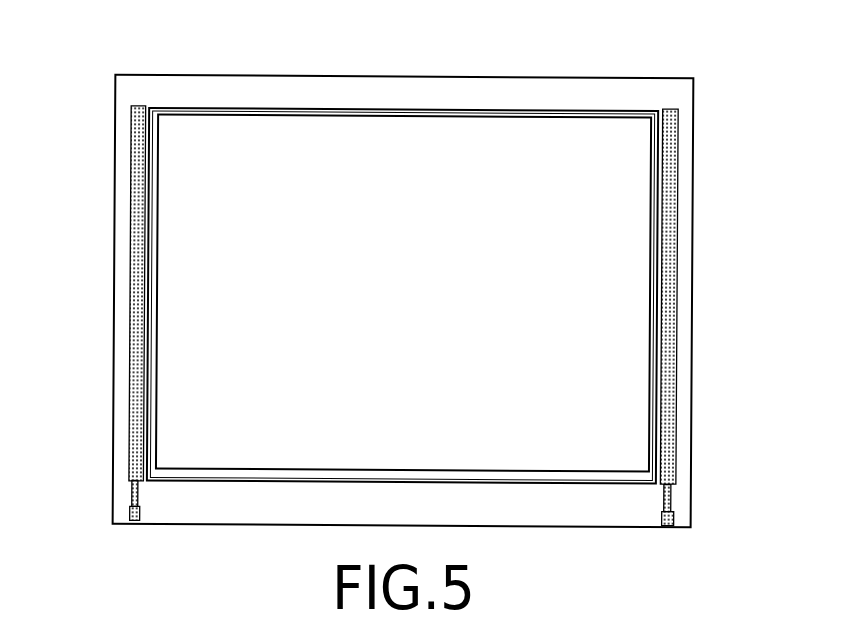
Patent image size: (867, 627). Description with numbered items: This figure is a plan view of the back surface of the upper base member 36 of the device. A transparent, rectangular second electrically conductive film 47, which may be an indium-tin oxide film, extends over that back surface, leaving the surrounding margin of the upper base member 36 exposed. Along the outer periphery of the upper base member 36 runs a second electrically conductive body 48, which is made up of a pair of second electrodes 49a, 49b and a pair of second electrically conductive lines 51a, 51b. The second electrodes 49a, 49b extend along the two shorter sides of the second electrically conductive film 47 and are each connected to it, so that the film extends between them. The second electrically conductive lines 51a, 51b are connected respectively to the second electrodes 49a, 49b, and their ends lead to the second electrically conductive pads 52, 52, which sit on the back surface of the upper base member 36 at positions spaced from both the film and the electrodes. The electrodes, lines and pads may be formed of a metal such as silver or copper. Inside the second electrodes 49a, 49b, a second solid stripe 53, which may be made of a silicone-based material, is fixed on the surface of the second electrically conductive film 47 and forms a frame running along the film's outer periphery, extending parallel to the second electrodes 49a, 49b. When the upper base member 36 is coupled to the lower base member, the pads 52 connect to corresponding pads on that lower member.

The upper base member 36 is at (692, 111).
The second electrically conductive film 47 is at (168, 175).
The second electrically conductive body 48 is at (712, 257).
The second electrode 49a is at (137, 107).
The second electrode 49b is at (672, 108).
The second electrically conductive line 51a is at (135, 496).
The second electrically conductive line 51b is at (675, 502).
The second electrically conductive pad 52 is at (133, 523).
The second solid stripe 53 is at (150, 293).